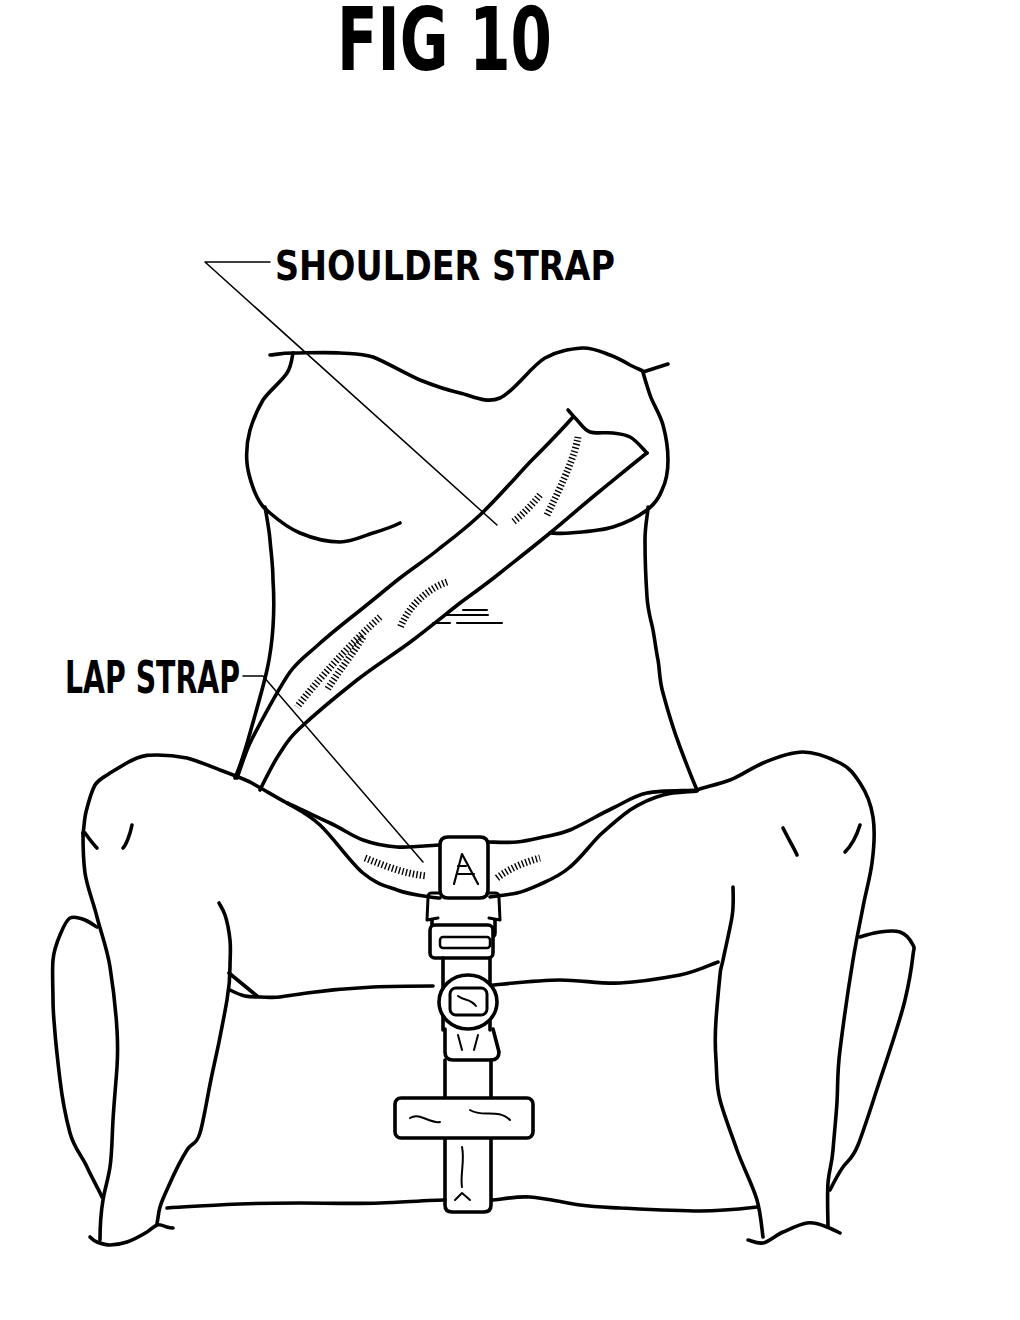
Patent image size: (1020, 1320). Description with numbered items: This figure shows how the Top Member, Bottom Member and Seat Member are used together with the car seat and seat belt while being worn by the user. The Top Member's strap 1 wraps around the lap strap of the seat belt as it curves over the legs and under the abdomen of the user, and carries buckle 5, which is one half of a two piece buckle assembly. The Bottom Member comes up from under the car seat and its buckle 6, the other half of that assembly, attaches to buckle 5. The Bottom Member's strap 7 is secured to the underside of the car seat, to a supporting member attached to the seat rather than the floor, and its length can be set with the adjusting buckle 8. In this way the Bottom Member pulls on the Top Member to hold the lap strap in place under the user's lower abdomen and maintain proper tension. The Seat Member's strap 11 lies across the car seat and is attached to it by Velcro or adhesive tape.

The strap 1 is at (468, 845).
The buckle 5 is at (460, 905).
The buckle 6 is at (495, 937).
The strap 7 is at (490, 1157).
The adjusting buckle 8 is at (497, 998).
The strap 11 is at (533, 1117).